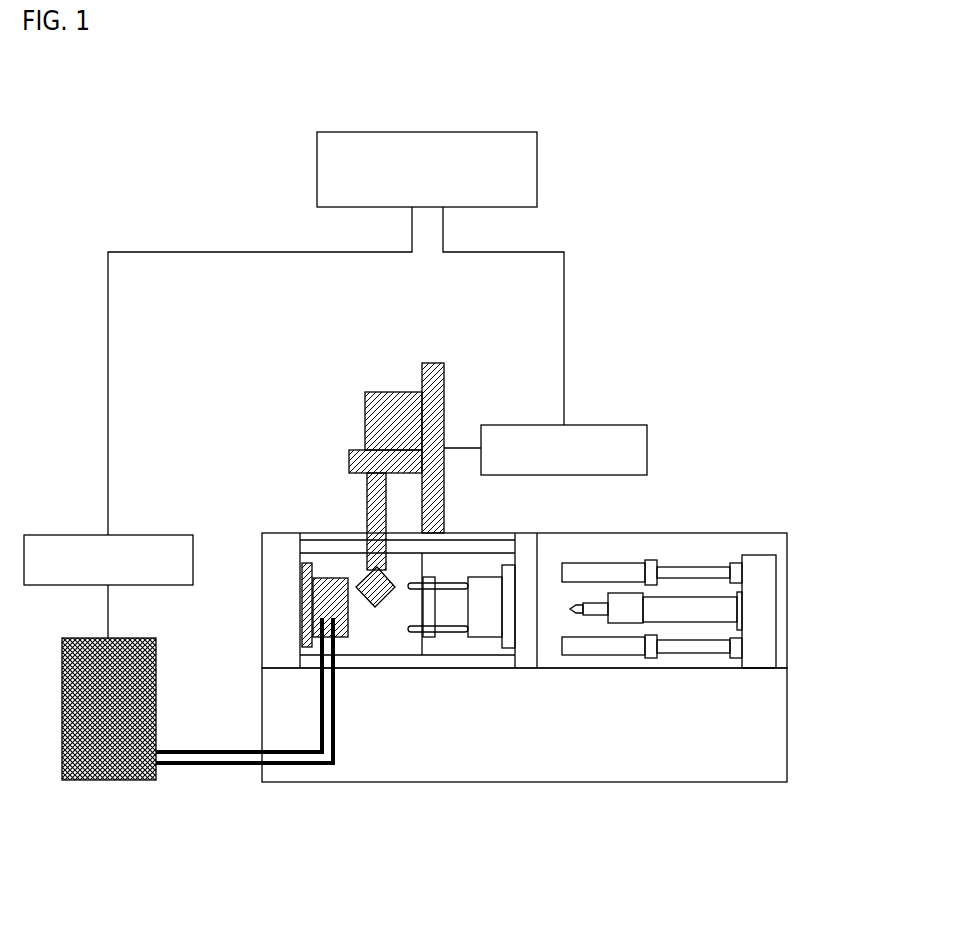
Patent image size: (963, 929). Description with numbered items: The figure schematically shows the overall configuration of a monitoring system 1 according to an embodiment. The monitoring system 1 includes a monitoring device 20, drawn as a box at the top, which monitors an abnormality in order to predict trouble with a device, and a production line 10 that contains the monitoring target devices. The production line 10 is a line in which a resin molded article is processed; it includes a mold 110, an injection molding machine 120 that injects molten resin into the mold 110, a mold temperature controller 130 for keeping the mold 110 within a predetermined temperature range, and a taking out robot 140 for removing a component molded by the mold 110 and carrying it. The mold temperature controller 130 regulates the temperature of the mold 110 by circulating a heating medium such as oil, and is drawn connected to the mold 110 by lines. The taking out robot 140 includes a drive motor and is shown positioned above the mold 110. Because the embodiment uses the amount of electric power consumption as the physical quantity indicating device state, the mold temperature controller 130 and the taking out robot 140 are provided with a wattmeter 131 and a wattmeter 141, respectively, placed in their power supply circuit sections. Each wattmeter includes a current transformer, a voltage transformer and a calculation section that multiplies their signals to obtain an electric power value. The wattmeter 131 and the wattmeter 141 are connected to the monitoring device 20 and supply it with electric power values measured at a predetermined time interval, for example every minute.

The monitoring system 1 is at (821, 228).
The production line 10 is at (812, 716).
The monitoring device 20 is at (489, 132).
The mold 110 is at (320, 590).
The injection molding machine 120 is at (708, 548).
The mold temperature controller 130 is at (143, 638).
The wattmeter 131 is at (143, 535).
The taking out robot 140 is at (445, 381).
The wattmeter 141 is at (597, 425).